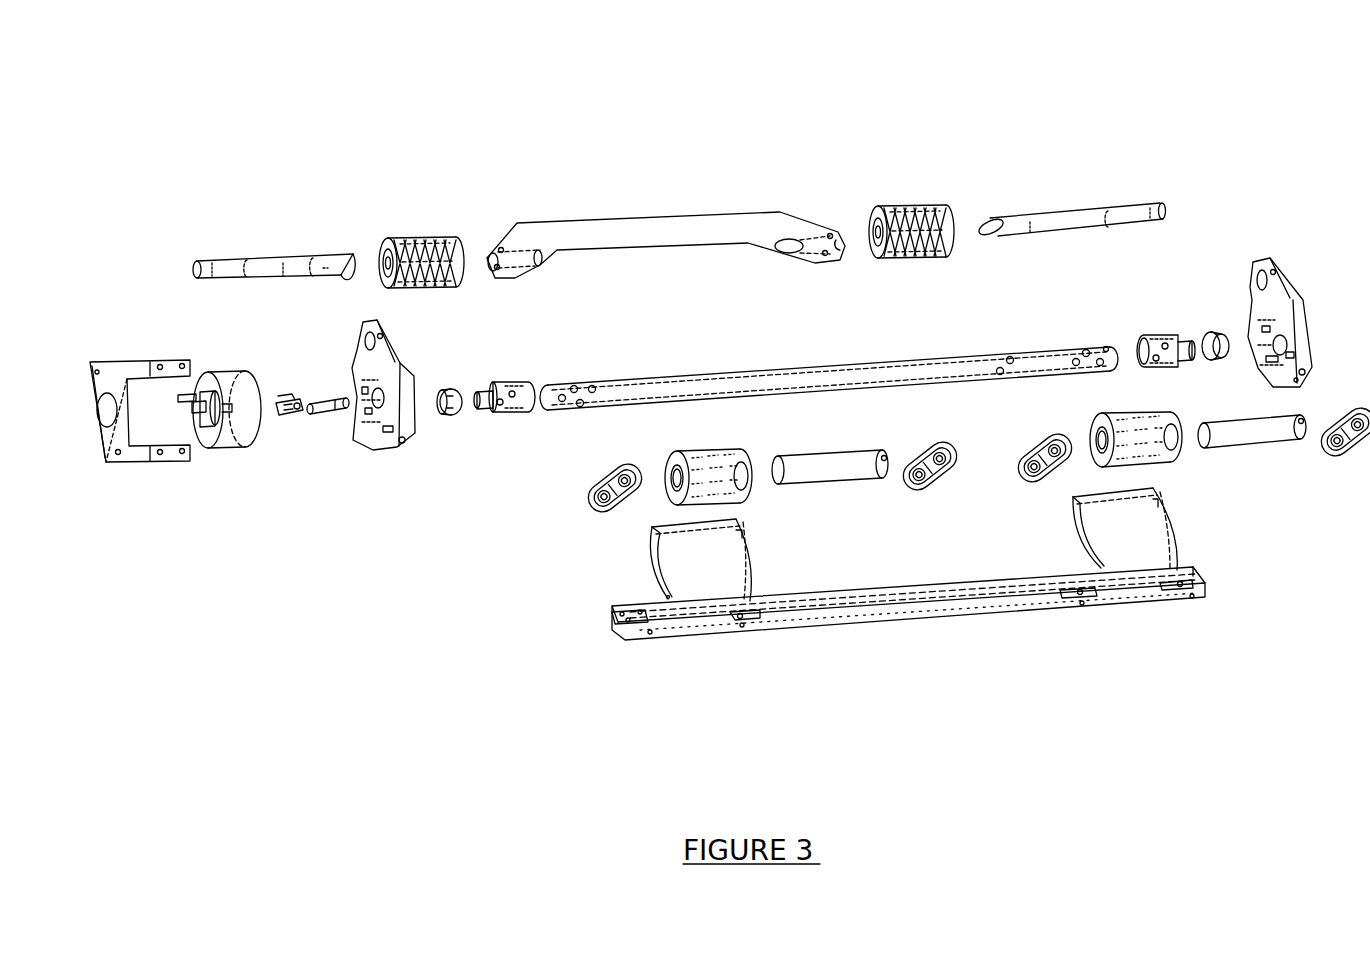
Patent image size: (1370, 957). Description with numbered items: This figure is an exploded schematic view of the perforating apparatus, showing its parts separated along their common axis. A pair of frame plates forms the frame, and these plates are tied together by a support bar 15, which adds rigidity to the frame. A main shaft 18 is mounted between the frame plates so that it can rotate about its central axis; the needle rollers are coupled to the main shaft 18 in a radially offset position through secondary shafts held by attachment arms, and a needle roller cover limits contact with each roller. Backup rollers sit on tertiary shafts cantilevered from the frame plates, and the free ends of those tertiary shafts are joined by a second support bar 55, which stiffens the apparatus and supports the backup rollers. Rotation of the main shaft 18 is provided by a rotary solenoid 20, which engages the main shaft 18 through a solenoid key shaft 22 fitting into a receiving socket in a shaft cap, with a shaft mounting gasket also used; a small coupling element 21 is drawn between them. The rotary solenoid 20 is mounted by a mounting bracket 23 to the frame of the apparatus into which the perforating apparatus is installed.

The support bar 15 is at (781, 632).
The main shaft 18 is at (922, 360).
The rotary solenoid 20 is at (224, 448).
The coupling 21 is at (296, 420).
The solenoid key shaft 22 is at (321, 418).
The mounting bracket 23 is at (143, 458).
The support bar 55 is at (590, 218).